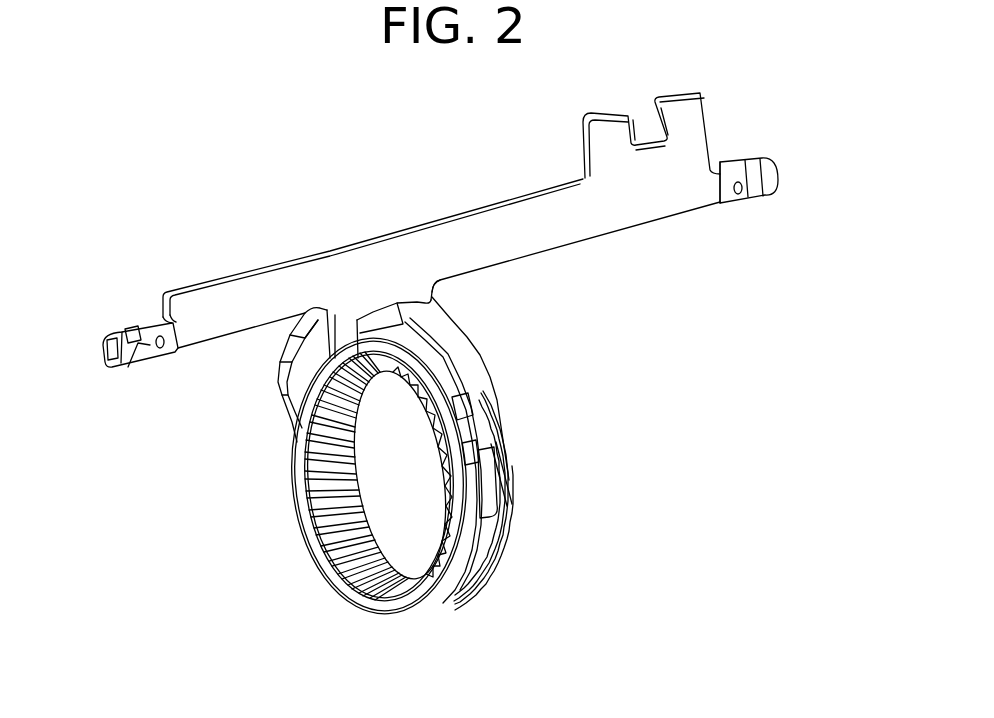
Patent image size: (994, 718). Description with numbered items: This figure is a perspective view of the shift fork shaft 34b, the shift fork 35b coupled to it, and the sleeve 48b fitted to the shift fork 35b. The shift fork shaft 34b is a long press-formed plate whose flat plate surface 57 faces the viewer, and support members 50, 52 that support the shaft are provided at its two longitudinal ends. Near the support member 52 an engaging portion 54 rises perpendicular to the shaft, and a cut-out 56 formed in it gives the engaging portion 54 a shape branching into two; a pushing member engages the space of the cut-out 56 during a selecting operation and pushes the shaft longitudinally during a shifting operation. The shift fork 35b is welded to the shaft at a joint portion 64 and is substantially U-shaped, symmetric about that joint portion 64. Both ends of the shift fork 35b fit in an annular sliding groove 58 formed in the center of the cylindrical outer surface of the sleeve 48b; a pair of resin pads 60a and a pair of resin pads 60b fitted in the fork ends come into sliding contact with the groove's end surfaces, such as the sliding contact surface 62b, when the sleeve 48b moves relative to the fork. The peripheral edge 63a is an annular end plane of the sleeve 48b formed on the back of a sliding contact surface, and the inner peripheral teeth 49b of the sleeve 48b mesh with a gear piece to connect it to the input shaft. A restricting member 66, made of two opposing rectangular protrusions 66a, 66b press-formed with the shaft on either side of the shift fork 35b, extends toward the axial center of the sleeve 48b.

The shift fork shaft 34b is at (322, 226).
The shift fork 35b is at (488, 343).
The sleeve 48b is at (304, 540).
The inner peripheral teeth 49b is at (331, 570).
The support member 50 is at (145, 363).
The support member 52 is at (768, 188).
The engaging portion 54 is at (578, 146).
The cut-out 56 is at (657, 118).
The plate surface 57 is at (593, 213).
The sliding groove 58 is at (481, 544).
The resin pads 60a is at (481, 468).
The resin pads 60b is at (503, 480).
The sliding contact surface 62b is at (463, 589).
The peripheral edge 63a is at (430, 597).
The joint portion 64 is at (388, 301).
The restricting member 66 is at (286, 348).
The protrusion 66a is at (347, 335).
The protrusion 66b is at (435, 293).